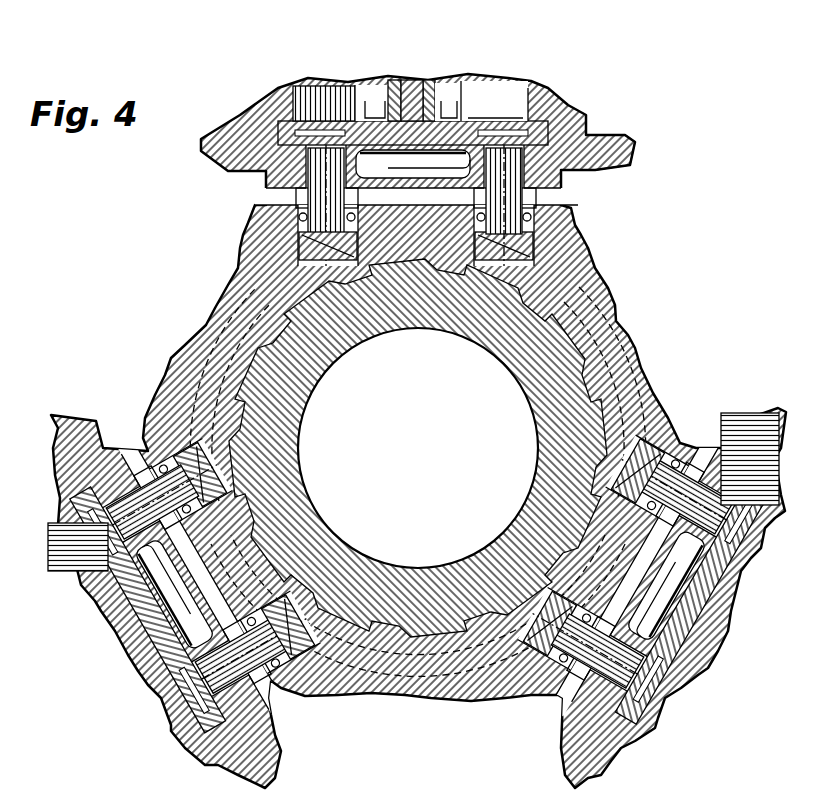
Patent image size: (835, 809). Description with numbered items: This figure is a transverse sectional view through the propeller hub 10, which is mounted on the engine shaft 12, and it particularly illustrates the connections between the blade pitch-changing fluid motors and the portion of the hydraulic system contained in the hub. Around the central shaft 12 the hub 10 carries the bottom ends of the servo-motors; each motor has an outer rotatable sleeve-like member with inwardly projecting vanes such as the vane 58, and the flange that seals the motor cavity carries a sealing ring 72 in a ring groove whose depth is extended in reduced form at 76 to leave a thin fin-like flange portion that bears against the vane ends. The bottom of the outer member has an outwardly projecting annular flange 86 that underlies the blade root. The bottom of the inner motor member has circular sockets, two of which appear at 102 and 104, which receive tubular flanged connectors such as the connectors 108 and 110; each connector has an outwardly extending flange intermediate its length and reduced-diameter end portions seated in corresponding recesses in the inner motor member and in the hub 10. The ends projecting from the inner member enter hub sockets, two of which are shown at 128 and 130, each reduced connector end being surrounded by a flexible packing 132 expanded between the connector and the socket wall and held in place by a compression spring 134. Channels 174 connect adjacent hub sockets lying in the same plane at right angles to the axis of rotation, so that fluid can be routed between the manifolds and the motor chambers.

The hub 10 is at (595, 285).
The shaft 12 is at (500, 340).
The vane 58 is at (410, 72).
The sealing ring 72 is at (546, 114).
The extended ring groove 76 is at (497, 122).
The annular flange 86 is at (600, 131).
The circular socket 102 is at (343, 160).
The circular socket 104 is at (460, 160).
The tubular flanged connector 108 is at (290, 190).
The tubular flanged connector 110 is at (522, 190).
The hub socket 128 is at (298, 240).
The hub socket 130 is at (540, 250).
The flexible packing 132 is at (272, 212).
The compression spring 134 is at (292, 228).
The channel 174 is at (240, 300).